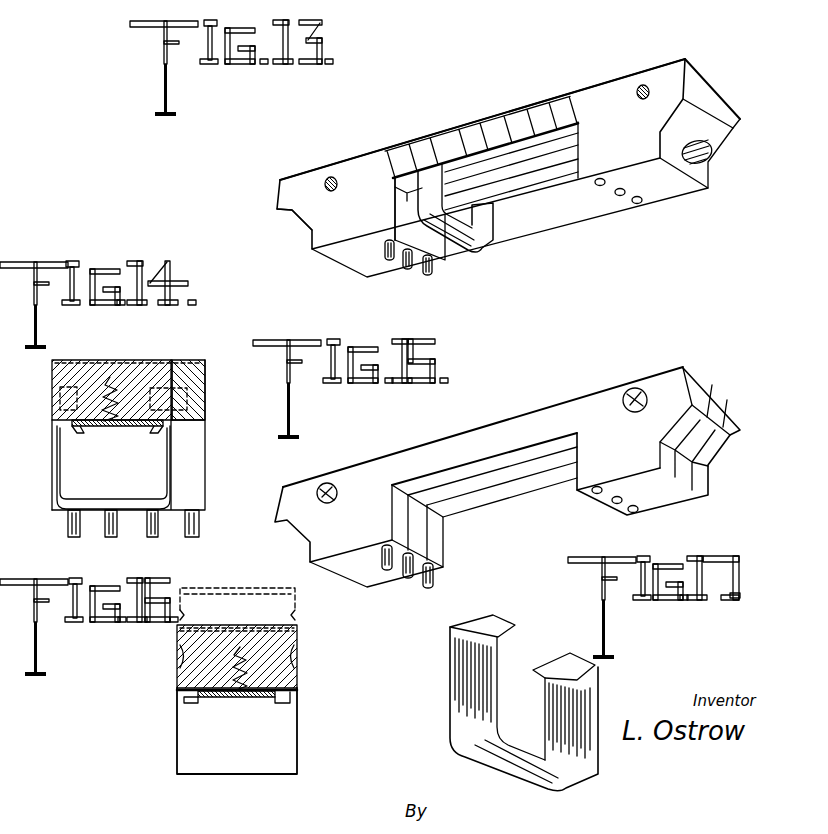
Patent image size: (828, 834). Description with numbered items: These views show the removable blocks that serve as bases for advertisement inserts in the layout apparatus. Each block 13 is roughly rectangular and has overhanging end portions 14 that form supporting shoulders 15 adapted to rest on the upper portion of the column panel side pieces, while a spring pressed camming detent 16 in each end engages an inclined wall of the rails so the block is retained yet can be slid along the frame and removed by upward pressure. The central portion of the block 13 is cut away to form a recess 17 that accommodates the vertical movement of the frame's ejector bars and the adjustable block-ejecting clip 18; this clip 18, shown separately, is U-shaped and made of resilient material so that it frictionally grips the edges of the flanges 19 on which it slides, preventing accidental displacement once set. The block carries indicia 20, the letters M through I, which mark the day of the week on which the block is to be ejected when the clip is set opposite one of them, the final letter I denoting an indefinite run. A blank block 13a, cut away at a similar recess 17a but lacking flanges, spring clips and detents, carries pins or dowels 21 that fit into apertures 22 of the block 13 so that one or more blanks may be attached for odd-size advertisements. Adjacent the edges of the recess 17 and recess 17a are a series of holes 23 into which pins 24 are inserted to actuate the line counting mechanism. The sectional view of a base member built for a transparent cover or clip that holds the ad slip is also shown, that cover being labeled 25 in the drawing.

In FIG. 13, the block 13 is at (550, 100).
In FIG. 14, the block 13 is at (138, 385).
In FIG. 14, the blank block 13a is at (190, 373).
In FIG. 15, the blank block 13a is at (548, 418).
In FIG. 13, the overhanging end portion 14 is at (280, 195).
In FIG. 13, the supporting shoulder 15 is at (288, 217).
In FIG. 13, the spring pressed camming detent 16 is at (710, 153).
In FIG. 13, the recess 17 is at (435, 242).
In FIG. 14, the recess 17 is at (68, 460).
In FIG. 16, the recess 17 is at (288, 752).
In FIG. 14, the recess 17a is at (185, 443).
In FIG. 15, the recess 17a is at (572, 480).
In FIG. 13, the block-ejecting clip 18 is at (493, 223).
In FIG. 14, the block-ejecting clip 18 is at (170, 480).
In FIG. 17, the block-ejecting clip 18 is at (462, 697).
In FIG. 13, the flange 19 is at (545, 153).
In FIG. 14, the flange 19 is at (152, 430).
In FIG. 16, the flange 19 is at (280, 702).
In FIG. 13, the indicia 20 is at (470, 133).
In FIG. 14, the pin or dowel 21 is at (187, 398).
In FIG. 15, the pin or dowel 21 is at (332, 485).
In FIG. 13, the aperture 22 is at (337, 180).
In FIG. 14, the aperture 22 is at (127, 363).
In FIG. 13, the hole 23 is at (637, 204).
In FIG. 15, the hole 23 is at (633, 513).
In FIG. 13, the pin 24 is at (390, 261).
In FIG. 14, the pin 24 is at (185, 540).
In FIG. 15, the pin 24 is at (387, 571).
In FIG. 16, the cover block 25 is at (243, 623).